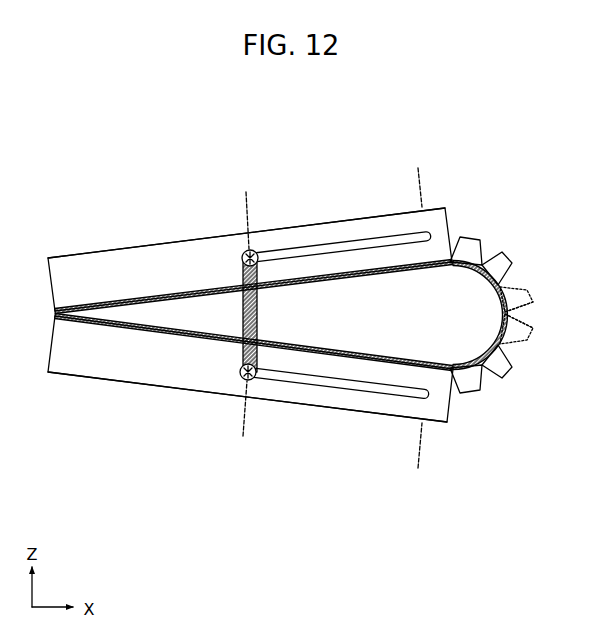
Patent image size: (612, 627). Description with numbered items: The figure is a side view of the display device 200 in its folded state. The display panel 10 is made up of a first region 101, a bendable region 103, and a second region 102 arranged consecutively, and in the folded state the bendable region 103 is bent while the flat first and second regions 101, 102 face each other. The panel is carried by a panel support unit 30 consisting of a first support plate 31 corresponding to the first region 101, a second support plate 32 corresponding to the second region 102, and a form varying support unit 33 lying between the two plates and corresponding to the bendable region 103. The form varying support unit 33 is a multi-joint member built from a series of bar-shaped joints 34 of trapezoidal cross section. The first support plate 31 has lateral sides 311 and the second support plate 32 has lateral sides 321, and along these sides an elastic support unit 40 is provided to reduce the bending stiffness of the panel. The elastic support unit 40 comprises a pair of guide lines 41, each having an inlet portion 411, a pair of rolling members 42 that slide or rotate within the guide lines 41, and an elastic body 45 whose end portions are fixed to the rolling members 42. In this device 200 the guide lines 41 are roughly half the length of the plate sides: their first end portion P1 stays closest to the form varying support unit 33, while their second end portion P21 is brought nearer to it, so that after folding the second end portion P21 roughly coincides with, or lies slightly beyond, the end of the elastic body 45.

The display device 200 is at (284, 116).
The display panel 10 is at (281, 315).
The first region 101 is at (346, 352).
The second region 102 is at (397, 277).
The bendable region 103 is at (500, 303).
The panel support unit 30 is at (289, 389).
The first support plate 31 is at (232, 371).
The sides 311 is at (147, 372).
The second support plate 32 is at (232, 254).
The sides 321 is at (148, 256).
The form varying support unit 33 is at (509, 330).
The joints 34 is at (538, 311).
The elastic support unit 40 is at (316, 374).
The guide lines 41 is at (339, 318).
The inlet portion 411 is at (357, 241).
The rolling members 42 is at (255, 249).
The elastic body 45 is at (243, 318).
The first end portion P1 is at (416, 318).
The second end portion P21 is at (239, 317).